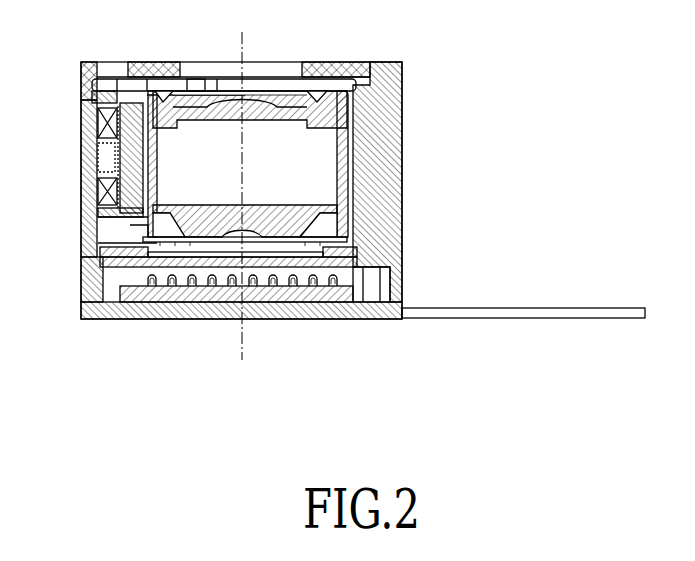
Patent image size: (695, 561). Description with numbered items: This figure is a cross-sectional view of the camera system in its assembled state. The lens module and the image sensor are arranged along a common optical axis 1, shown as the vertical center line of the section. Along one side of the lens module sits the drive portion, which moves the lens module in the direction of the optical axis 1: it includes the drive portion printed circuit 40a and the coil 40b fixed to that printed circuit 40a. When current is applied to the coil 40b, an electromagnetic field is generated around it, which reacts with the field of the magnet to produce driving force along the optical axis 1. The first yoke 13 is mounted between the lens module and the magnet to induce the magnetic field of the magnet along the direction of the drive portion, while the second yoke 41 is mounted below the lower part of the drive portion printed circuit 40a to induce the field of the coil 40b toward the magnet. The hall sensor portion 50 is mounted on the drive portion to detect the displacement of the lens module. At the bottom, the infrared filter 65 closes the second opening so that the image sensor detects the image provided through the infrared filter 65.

The optical axis 1 is at (242, 32).
The first yoke 13 is at (152, 65).
The drive portion printed circuit 40a is at (84, 197).
The coil 40b is at (84, 132).
The second yoke 41 is at (84, 143).
The hall sensor portion 50 is at (84, 162).
The infrared filter 65 is at (308, 270).